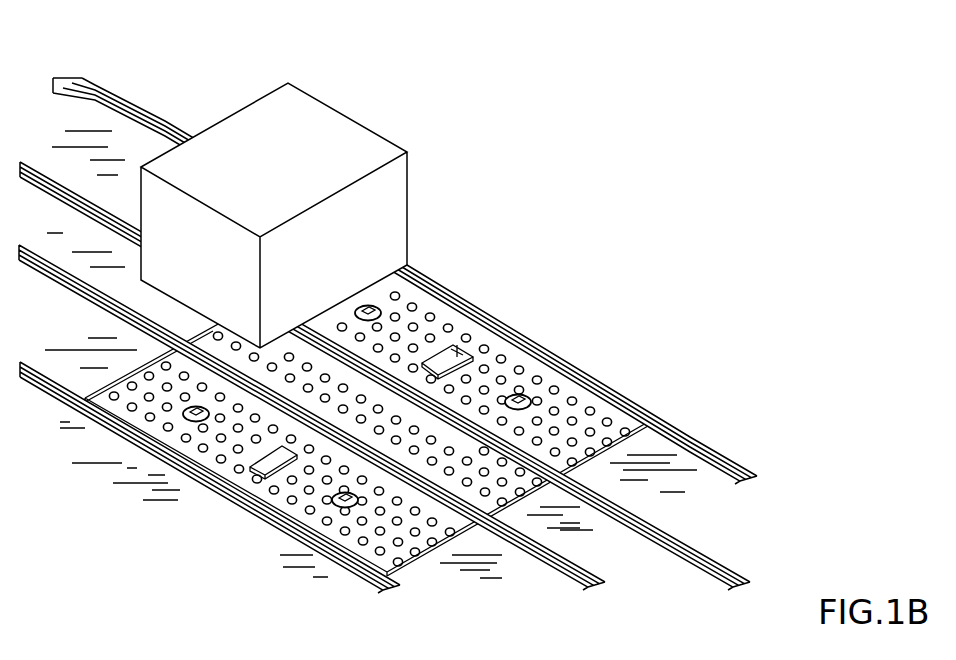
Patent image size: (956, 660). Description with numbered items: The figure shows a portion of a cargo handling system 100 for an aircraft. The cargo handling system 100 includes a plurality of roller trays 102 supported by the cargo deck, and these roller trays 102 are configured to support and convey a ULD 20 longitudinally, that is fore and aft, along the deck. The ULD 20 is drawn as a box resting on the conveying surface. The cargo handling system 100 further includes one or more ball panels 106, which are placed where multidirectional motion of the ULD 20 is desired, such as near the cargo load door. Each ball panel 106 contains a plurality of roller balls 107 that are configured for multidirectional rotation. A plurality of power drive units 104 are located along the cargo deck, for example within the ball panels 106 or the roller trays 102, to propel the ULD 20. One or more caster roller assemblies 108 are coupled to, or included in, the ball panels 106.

The ULD 20 is at (310, 113).
The cargo handling system 100 is at (573, 129).
The roller trays 102 is at (685, 428).
The power drive units 104 is at (453, 350).
The ball panels 106 is at (620, 411).
The roller balls 107 is at (557, 388).
The caster roller assembly 108 is at (373, 312).